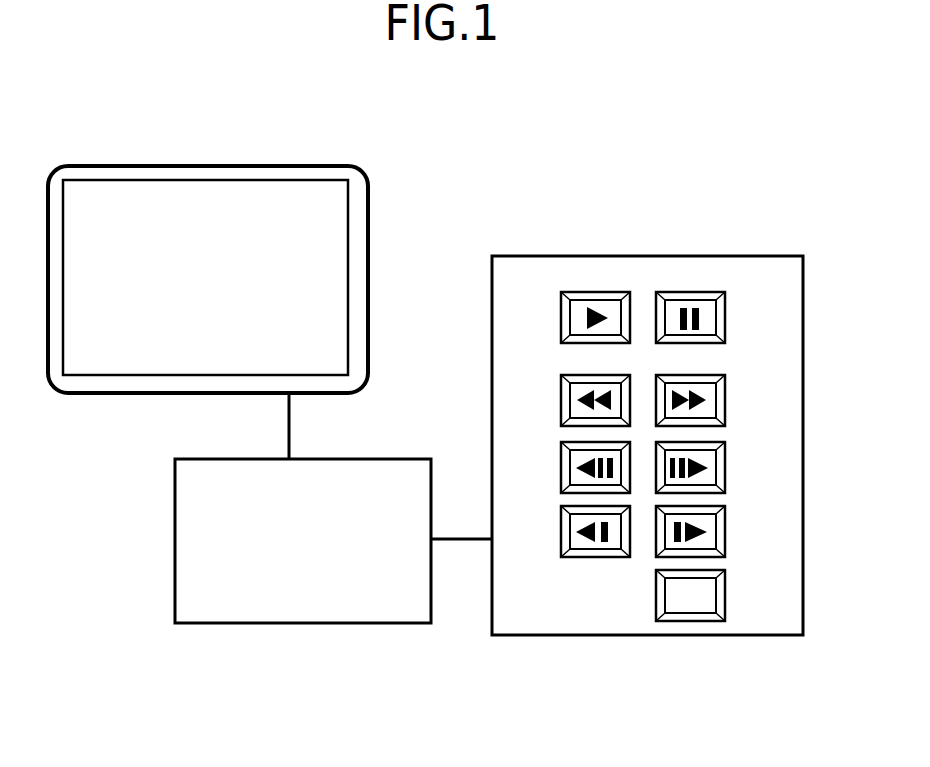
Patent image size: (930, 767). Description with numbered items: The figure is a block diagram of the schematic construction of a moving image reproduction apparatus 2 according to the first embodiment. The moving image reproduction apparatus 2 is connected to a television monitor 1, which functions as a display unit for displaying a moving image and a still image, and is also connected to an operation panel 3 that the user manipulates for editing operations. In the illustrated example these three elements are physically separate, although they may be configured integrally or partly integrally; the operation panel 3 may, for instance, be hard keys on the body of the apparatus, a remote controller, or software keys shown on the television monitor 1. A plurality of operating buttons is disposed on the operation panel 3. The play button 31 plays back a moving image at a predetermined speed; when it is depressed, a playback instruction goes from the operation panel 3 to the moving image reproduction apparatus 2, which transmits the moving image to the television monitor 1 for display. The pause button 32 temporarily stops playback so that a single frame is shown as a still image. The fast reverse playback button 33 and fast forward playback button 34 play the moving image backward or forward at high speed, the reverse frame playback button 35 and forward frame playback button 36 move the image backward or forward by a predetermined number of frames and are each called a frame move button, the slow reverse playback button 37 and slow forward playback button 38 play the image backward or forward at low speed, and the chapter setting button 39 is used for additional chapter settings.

The television monitor 1 is at (268, 165).
The moving image reproduction apparatus 2 is at (404, 459).
The operation panel 3 is at (714, 256).
The play button 31 is at (561, 320).
The pause button 32 is at (725, 321).
The fast reverse playback button 33 is at (561, 400).
The fast forward playback button 34 is at (725, 401).
The reverse frame playback button 35 is at (561, 466).
The forward frame playback button 36 is at (725, 467).
The slow reverse playback button 37 is at (561, 532).
The slow forward playback button 38 is at (725, 532).
The chapter setting button 39 is at (725, 592).